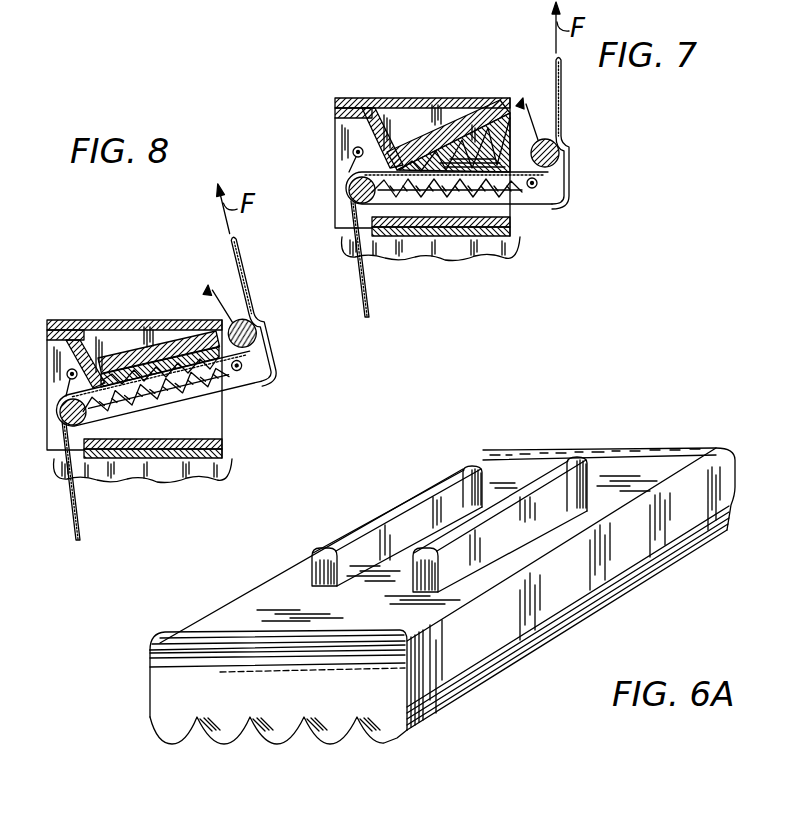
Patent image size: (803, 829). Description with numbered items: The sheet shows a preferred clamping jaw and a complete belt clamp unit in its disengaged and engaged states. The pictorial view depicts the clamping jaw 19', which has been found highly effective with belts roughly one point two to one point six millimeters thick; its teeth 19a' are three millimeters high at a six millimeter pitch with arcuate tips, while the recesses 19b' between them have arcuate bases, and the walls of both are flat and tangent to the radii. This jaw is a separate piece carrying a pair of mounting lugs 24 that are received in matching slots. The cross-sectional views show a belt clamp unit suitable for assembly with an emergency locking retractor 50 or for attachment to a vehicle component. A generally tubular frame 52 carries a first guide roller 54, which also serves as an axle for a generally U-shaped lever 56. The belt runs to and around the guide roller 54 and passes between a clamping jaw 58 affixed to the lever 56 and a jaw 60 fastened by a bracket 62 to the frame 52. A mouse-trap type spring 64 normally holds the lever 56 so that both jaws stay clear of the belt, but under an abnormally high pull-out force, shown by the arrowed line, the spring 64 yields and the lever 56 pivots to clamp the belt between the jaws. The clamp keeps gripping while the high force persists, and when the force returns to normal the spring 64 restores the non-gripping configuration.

In FIG. 6A, the clamping jaw 19' is at (442, 589).
In FIG. 6A, the teeth 19a' is at (278, 756).
In FIG. 6A, the recesses 19b' is at (290, 757).
In FIG. 6A, the mounting lugs 24 is at (540, 481).
In FIG. 7, the emergency locking retractor 50 is at (519, 246).
In FIG. 8, the emergency locking retractor 50 is at (228, 468).
In FIG. 7, the tubular frame 52 is at (486, 108).
In FIG. 8, the tubular frame 52 is at (158, 327).
In FIG. 7, the first guide roller 54 is at (346, 185).
In FIG. 8, the first guide roller 54 is at (58, 413).
In FIG. 7, the lever 56 is at (556, 198).
In FIG. 8, the lever 56 is at (263, 372).
In FIG. 7, the clamping jaw 58 is at (448, 188).
In FIG. 8, the clamping jaw 58 is at (157, 385).
In FIG. 7, the jaw 60 is at (488, 108).
In FIG. 8, the jaw 60 is at (211, 330).
In FIG. 7, the bracket 62 is at (394, 153).
In FIG. 8, the bracket 62 is at (104, 375).
In FIG. 7, the spring 64 is at (352, 155).
In FIG. 8, the spring 64 is at (66, 378).